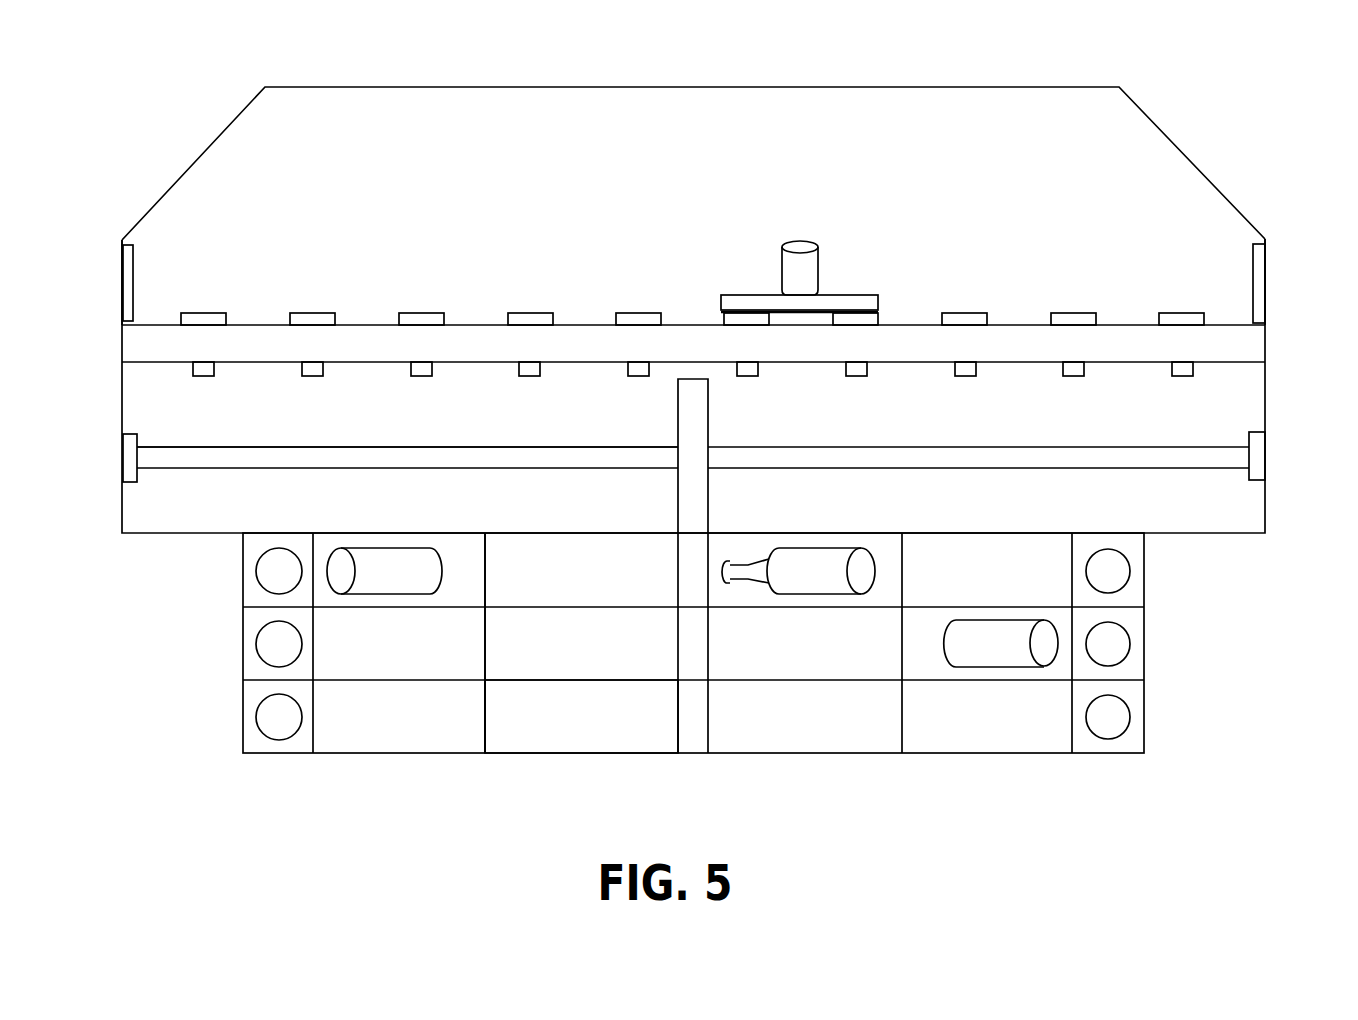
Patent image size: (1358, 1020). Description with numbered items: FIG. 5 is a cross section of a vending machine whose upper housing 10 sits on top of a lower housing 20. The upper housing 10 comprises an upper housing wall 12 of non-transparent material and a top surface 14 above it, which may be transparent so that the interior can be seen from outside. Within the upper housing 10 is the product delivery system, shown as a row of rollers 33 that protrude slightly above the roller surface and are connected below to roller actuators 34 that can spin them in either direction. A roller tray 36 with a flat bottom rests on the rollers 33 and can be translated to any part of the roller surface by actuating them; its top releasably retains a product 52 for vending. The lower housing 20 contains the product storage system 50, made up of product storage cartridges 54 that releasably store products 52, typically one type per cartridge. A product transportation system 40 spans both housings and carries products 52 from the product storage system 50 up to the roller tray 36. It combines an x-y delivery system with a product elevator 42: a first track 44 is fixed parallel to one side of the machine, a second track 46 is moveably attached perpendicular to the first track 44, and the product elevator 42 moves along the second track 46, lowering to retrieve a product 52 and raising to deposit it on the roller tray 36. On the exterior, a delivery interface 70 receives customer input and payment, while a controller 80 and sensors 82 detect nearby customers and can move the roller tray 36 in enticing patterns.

The upper housing 10 is at (1266, 408).
The upper housing wall 12 is at (282, 354).
The top surface 14 is at (303, 87).
The lower housing 20 is at (1145, 662).
The rollers 33 is at (408, 312).
The roller actuators 34 is at (417, 376).
The roller tray 36 is at (868, 300).
The product transportation system 40 is at (742, 422).
The product elevator 42 is at (695, 505).
The first track 44 is at (942, 456).
The second track 46 is at (130, 460).
The product storage system 50 is at (427, 708).
The product 52 is at (794, 268).
The product storage cartridge 54 is at (575, 663).
The delivery interface 70 is at (128, 283).
The controller 80 is at (1266, 298).
The sensors 82 is at (121, 305).